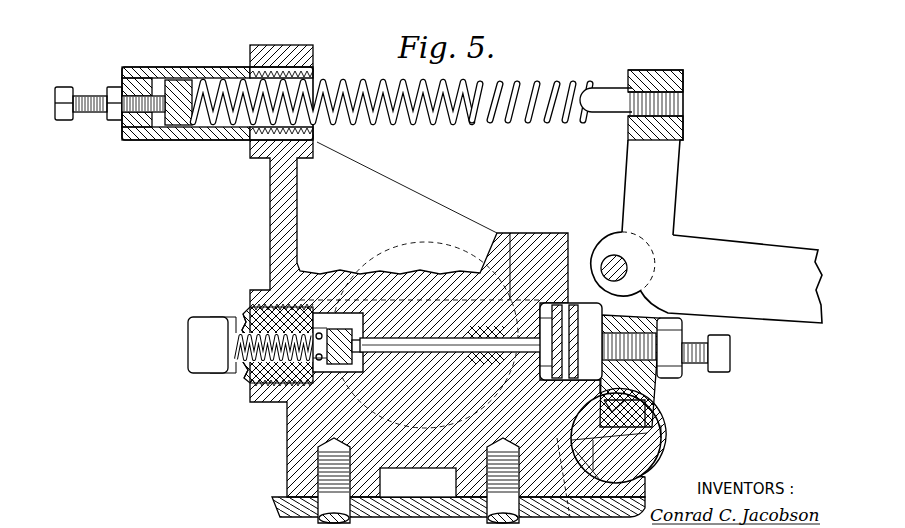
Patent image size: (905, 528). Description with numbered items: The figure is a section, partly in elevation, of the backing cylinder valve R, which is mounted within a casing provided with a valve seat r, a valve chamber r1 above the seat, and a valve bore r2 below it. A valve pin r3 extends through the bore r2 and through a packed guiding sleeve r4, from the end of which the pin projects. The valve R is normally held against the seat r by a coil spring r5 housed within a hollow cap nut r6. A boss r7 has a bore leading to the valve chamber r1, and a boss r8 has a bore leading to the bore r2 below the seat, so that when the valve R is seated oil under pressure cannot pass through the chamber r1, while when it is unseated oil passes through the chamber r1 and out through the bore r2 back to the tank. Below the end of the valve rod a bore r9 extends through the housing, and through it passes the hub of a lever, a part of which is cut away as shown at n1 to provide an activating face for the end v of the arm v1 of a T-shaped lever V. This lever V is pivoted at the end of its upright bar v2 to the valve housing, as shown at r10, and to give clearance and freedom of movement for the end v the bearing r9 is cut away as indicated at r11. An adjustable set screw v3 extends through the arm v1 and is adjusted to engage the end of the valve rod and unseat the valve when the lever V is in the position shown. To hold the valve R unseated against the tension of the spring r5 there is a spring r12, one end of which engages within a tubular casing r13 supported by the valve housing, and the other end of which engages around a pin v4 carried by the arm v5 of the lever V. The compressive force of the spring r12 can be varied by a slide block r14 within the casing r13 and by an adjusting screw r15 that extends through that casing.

The backing cylinder valve R is at (353, 385).
The valve seat r is at (382, 305).
The valve chamber r1 is at (335, 312).
The valve bore r2 is at (402, 300).
The valve pin r3 is at (446, 300).
The packed guiding sleeve r4 is at (540, 322).
The coil spring r5 is at (243, 385).
The hollow cap nut r6 is at (212, 376).
The boss r7 is at (350, 300).
The boss r8 is at (428, 300).
The bore r9 is at (659, 466).
The pivot r10 is at (612, 260).
The cut-away portion r11 is at (657, 434).
The spring r12 is at (499, 82).
The tubular casing r13 is at (197, 70).
The slide block r14 is at (172, 82).
The adjusting screw r15 is at (89, 95).
The T-shaped lever V is at (706, 248).
The end of arm v is at (653, 421).
The arm v1 is at (660, 384).
The upright bar v2 is at (731, 279).
The adjustable set screw v3 is at (729, 356).
The pin v4 is at (600, 90).
The arm v5 is at (652, 152).
The cut-away portion of hub n1 is at (603, 460).